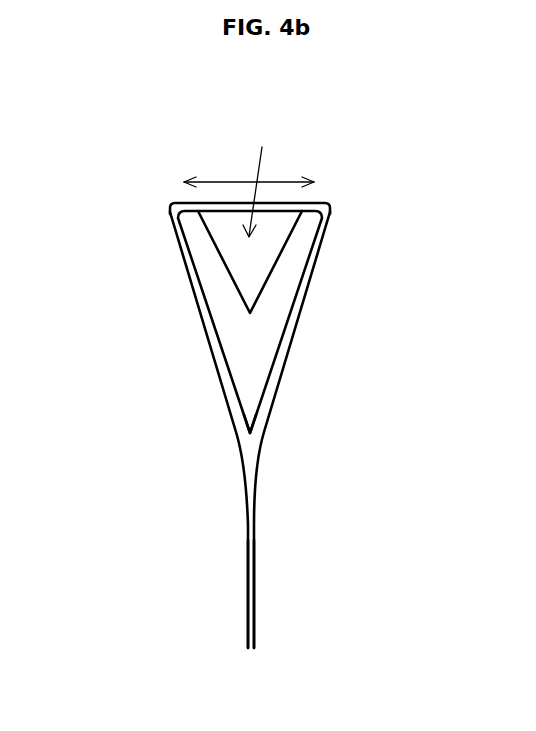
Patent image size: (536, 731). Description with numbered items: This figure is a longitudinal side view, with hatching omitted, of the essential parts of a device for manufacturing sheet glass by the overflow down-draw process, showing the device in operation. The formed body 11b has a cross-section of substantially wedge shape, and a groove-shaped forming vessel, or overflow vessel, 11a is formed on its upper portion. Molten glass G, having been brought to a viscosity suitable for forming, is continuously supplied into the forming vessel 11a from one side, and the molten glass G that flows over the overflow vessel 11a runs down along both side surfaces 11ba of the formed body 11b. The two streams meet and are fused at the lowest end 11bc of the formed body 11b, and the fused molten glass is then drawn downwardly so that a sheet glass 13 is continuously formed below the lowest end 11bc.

The molten glass G is at (329, 204).
The forming vessel 11a is at (249, 180).
The formed body 11b is at (288, 261).
The side surfaces 11ba is at (200, 317).
The lowest end 11bc is at (250, 433).
The sheet glass 13 is at (255, 616).